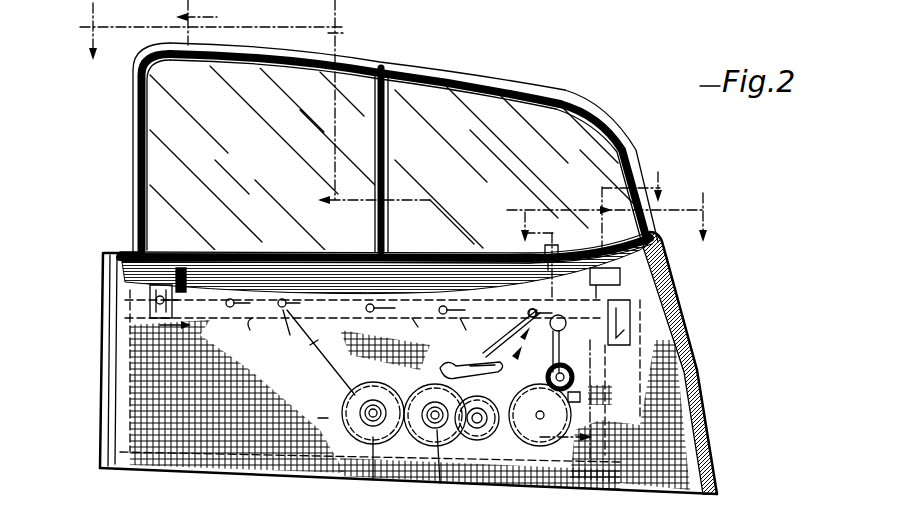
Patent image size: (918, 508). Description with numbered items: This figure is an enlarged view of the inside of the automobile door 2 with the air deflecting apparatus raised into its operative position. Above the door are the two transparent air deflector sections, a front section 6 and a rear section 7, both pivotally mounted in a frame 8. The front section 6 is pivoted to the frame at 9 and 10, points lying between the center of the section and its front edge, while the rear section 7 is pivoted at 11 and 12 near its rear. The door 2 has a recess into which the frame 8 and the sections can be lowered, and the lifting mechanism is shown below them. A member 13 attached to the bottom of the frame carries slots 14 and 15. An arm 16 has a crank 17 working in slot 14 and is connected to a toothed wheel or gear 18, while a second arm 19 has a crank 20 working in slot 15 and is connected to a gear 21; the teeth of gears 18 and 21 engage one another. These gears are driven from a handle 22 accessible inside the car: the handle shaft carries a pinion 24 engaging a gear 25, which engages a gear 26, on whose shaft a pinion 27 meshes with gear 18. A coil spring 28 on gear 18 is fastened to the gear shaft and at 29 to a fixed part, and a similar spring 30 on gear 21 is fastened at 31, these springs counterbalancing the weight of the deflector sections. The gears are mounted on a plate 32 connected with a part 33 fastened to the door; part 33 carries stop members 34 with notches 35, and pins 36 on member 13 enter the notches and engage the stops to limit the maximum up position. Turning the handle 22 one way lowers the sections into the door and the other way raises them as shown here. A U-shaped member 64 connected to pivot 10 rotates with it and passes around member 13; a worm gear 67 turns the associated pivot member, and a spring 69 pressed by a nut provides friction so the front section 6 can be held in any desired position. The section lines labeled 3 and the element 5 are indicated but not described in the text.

The door 2 is at (690, 429).
The section line 3- 3 is at (390, 122).
The body panel 5 is at (122, 258).
The front air deflector section 6 is at (513, 174).
The rear air deflector section 7 is at (280, 172).
The frame 8 is at (522, 88).
The pivot 9 is at (602, 116).
The pivot 10 is at (600, 274).
The pivot 11 is at (170, 46).
The pivot 12 is at (182, 250).
The member 13 is at (423, 327).
The slot 14 is at (454, 326).
The slot 15 is at (258, 326).
The arm 16 is at (500, 346).
The crank 17 is at (528, 311).
The toothed wheel or gear 18 is at (440, 380).
The second arm 19 is at (326, 338).
The crank 20 is at (408, 343).
The toothed wheel or gear 21 is at (364, 416).
The handle 22 is at (575, 346).
The pinion 24 is at (500, 384).
The gear 25 is at (545, 445).
The gear 26 is at (504, 410).
The pinion 27 is at (497, 425).
The coil spring 28 is at (427, 425).
The fastening point 29 is at (437, 467).
The spring 30 is at (367, 405).
The fastening point 31 is at (367, 469).
The plate 32 is at (312, 418).
The part 33 is at (215, 448).
The stop member 34 is at (118, 292).
The notch 35 is at (720, 328).
The pin 36 is at (184, 300).
The U-shaped member 64 is at (552, 256).
The worm gear 67 is at (578, 383).
The spring 69 is at (580, 398).